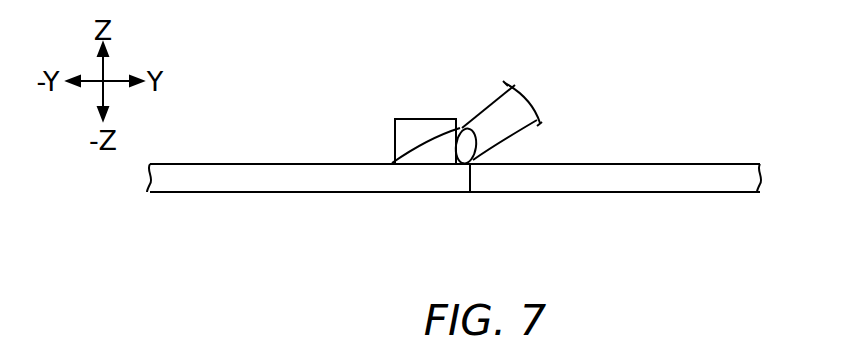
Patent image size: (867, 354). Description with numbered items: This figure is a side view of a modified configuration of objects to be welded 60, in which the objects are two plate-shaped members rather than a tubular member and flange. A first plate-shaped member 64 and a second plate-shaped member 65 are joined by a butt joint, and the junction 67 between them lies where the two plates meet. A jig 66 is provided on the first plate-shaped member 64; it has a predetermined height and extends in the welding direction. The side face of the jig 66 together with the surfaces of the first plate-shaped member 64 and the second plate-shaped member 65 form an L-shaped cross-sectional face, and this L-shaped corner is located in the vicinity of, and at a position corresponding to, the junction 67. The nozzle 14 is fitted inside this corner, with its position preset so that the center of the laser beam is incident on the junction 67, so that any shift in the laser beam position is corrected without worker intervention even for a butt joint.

The nozzle 14 is at (493, 112).
The objects to be welded 60 is at (647, 105).
The first plate-shaped member 64 is at (290, 183).
The second plate-shaped member 65 is at (600, 187).
The jig 66 is at (420, 127).
The junction 67 is at (392, 163).